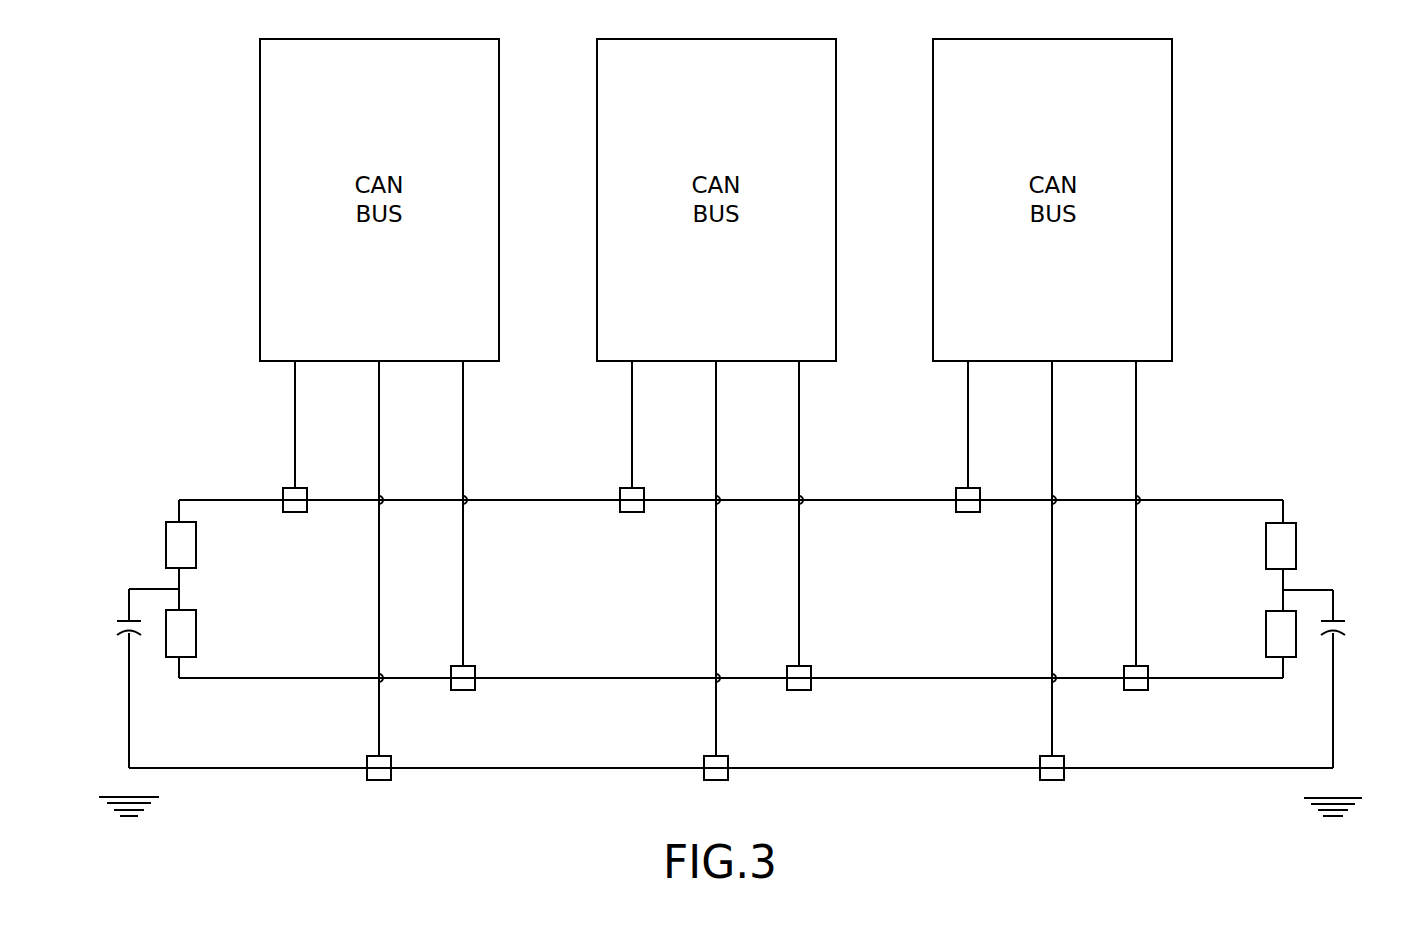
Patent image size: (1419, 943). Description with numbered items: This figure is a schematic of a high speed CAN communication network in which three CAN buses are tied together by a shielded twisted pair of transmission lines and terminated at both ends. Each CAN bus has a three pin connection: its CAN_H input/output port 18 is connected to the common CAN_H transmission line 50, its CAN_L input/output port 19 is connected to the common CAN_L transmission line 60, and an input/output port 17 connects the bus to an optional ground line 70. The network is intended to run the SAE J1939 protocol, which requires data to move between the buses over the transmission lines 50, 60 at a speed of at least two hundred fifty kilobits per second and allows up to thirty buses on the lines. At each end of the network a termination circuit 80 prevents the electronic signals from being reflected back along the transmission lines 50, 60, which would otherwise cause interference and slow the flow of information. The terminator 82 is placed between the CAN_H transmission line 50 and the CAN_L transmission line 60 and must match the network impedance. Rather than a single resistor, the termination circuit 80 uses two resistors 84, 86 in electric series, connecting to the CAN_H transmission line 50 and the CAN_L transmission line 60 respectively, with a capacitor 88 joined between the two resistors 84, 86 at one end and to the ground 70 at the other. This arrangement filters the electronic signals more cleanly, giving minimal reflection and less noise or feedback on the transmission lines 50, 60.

The input/output port 17 is at (726, 759).
The CAN_H input/output port 18 is at (643, 490).
The CAN_L input/output port 19 is at (810, 668).
The CAN_H transmission line 50 is at (495, 500).
The CAN_L transmission line 60 is at (495, 678).
The ground line 70 is at (507, 768).
The termination circuit 80 is at (169, 637).
The terminator 82 is at (208, 520).
The resistor 84 is at (1266, 548).
The resistor 86 is at (1266, 633).
The capacitor 88 is at (1344, 630).